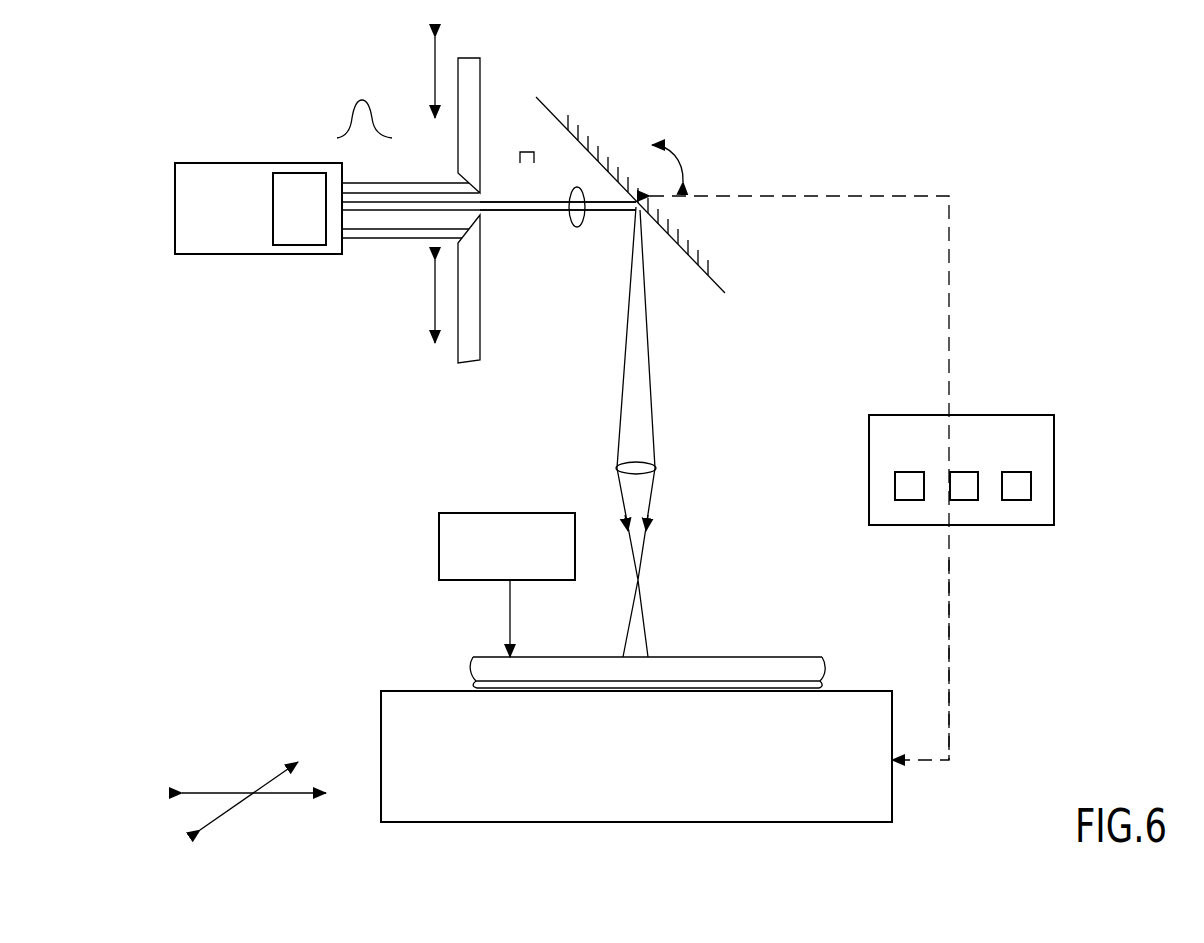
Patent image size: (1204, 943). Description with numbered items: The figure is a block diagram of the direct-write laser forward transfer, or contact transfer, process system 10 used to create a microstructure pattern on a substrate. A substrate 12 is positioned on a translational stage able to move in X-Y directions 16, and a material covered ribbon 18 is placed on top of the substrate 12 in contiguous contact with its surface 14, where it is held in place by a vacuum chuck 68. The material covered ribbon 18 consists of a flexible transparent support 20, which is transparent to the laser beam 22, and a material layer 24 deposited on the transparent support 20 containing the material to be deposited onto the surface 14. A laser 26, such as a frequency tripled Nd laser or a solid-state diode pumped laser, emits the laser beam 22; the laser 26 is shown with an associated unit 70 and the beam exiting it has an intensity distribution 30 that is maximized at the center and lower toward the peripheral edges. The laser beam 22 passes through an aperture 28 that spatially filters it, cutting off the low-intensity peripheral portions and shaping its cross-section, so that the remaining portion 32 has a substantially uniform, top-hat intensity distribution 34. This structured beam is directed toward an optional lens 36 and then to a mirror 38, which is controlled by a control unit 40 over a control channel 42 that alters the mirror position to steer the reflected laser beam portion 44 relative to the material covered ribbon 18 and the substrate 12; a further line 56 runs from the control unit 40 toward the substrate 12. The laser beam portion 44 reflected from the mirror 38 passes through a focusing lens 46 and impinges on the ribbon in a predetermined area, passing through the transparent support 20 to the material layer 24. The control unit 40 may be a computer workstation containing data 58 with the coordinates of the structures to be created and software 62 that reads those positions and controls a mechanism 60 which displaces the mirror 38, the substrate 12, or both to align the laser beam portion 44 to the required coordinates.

The direct-write laser forward transfer process system 10 is at (733, 118).
The substrate 12 is at (873, 805).
The surface 14 is at (415, 690).
The X-Y directions 16 is at (252, 793).
The material covered ribbon 18 is at (793, 633).
The flexible transparent support 20 is at (818, 667).
The laser beam 22 is at (400, 203).
The material layer 24 is at (820, 685).
The laser 26 is at (206, 238).
The aperture 28 is at (482, 215).
The intensity distribution 30 is at (338, 115).
The portion of the laser beam 32 is at (522, 212).
The uniform intensity distribution 34 is at (523, 140).
The lens 36 is at (578, 227).
The mirror 38 is at (702, 252).
The control unit 40 is at (1043, 437).
The control channel 42 is at (952, 296).
The laser beam portion 44 is at (638, 577).
The lens 46 is at (638, 470).
The control line 56 is at (950, 672).
The data 58 is at (907, 483).
The mechanism 60 is at (963, 487).
The software 62 is at (1017, 493).
The vacuum chuck 68 is at (439, 538).
The acousto-optic modulator 70 is at (298, 247).